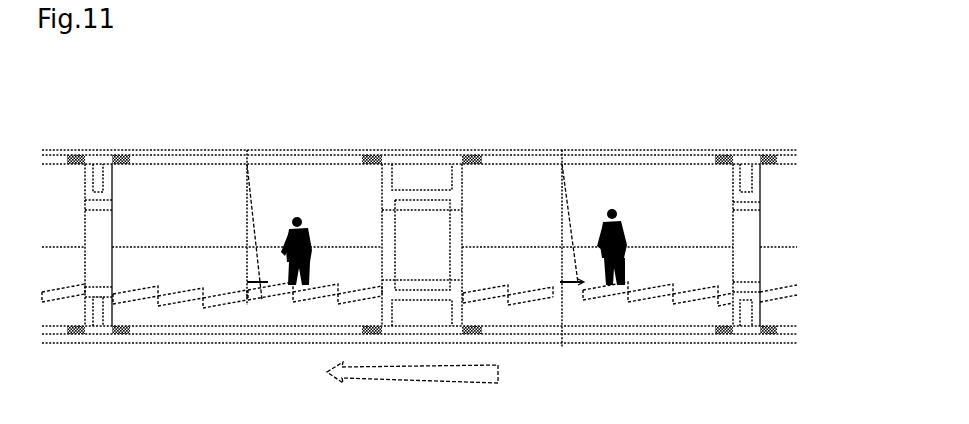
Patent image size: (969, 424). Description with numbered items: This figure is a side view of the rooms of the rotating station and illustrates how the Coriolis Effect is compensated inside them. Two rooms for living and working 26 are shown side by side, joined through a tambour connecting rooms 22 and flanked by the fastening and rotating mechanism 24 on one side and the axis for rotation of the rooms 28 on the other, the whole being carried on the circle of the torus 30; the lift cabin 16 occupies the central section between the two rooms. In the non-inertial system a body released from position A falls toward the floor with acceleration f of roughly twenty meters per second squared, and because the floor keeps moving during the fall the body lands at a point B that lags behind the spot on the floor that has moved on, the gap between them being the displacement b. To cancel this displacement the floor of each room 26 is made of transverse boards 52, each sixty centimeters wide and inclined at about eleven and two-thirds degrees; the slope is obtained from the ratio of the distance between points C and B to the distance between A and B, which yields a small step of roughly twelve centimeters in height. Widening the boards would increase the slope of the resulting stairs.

The lift cabin 16 is at (420, 200).
The tambour connecting rooms 22 is at (422, 283).
The fastening and rotating mechanism 24 is at (773, 155).
The rooms for living and working 26 is at (507, 163).
The axis for rotation of the rooms 28 is at (183, 247).
The torus 30 is at (432, 150).
The floor boards 52 is at (183, 305).
The starting position of the falling body A is at (248, 166).
The landing position of the falling body B is at (262, 283).
The point defining board slope C is at (246, 292).
The displacement b is at (253, 300).
The acceleration of the falling body f is at (250, 217).